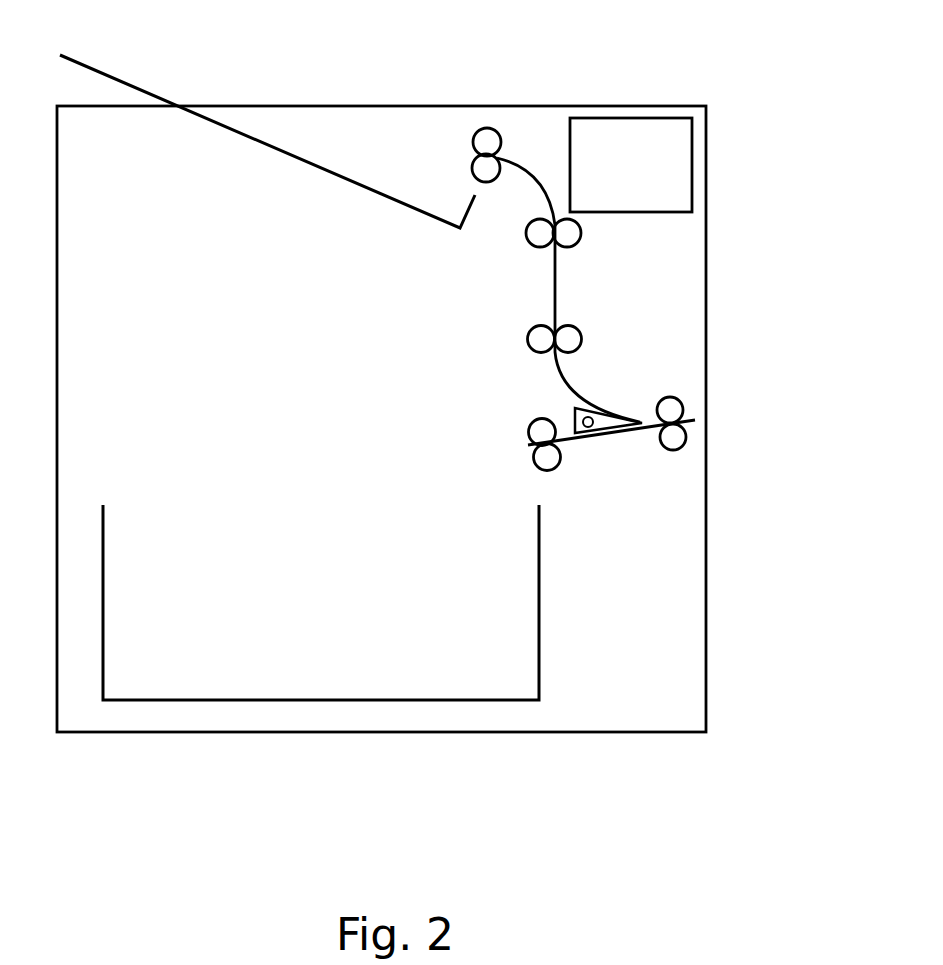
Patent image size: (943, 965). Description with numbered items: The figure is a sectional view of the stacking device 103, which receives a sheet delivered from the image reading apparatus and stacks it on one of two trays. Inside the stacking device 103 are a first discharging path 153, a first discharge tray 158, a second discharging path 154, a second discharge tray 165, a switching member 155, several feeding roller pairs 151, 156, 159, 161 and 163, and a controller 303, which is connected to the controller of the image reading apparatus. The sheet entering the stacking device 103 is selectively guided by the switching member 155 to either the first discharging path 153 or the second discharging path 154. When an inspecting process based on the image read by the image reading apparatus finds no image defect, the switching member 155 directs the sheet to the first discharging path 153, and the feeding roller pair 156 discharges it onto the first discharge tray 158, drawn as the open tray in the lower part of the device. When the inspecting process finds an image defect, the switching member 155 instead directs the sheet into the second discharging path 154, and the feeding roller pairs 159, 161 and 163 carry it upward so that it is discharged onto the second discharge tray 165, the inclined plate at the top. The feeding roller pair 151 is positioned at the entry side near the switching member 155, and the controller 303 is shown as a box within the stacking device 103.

The stacking device 103 is at (609, 670).
The feeding roller pair 151 is at (672, 410).
The first discharging path 153 is at (577, 448).
The second discharging path 154 is at (548, 286).
The switching member 155 is at (603, 425).
The feeding roller pair 156 is at (545, 430).
The first discharge tray 158 is at (320, 700).
The feeding roller pair 159 is at (575, 337).
The feeding roller pair 161 is at (562, 232).
The feeding roller pair 163 is at (486, 140).
The second discharge tray 165 is at (300, 157).
The controller 303 is at (612, 180).